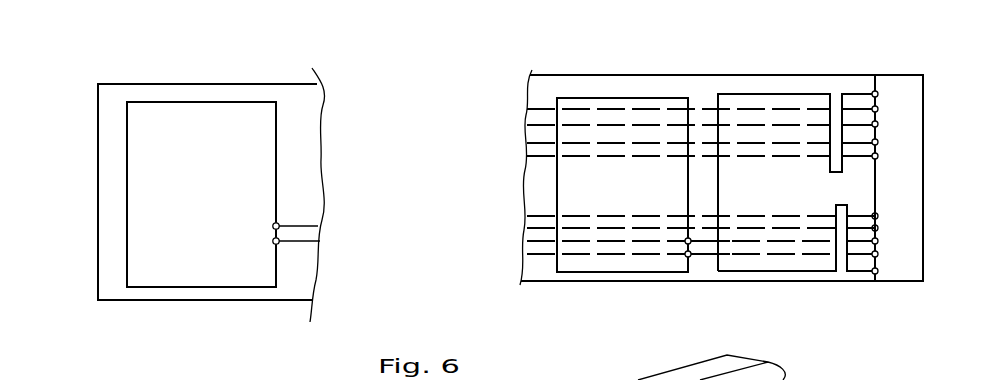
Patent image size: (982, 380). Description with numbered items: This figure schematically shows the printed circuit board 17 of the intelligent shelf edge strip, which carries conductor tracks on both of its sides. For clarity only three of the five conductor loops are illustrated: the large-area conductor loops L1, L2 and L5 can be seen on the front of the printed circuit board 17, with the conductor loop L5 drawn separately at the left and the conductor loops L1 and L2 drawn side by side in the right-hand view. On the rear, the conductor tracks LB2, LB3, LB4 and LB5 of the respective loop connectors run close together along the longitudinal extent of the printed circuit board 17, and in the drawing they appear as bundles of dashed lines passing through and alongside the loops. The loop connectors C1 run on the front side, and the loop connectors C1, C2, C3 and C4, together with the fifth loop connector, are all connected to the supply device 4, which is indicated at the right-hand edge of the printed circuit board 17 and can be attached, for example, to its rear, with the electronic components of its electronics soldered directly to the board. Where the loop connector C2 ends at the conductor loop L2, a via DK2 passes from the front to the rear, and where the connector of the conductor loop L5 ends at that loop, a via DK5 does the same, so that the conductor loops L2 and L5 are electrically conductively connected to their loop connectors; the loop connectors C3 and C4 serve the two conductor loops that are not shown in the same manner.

The printed circuit board 17 is at (205, 76).
The supply device 4 is at (910, 95).
The conductor loop L5 is at (127, 192).
The conductor loop L1 is at (716, 265).
The conductor loop L2 is at (557, 260).
The conductor tracks LB2 is at (818, 242).
The conductor tracks LB3 is at (770, 216).
The conductor tracks LB4 is at (615, 156).
The conductor tracks LB5 is at (779, 143).
The loop connector C1 is at (878, 92).
The loop connector C2 is at (684, 241).
The loop connector C3 is at (280, 224).
The loop connector C4 is at (881, 139).
The via DK2 is at (674, 246).
The via DK5 is at (268, 233).